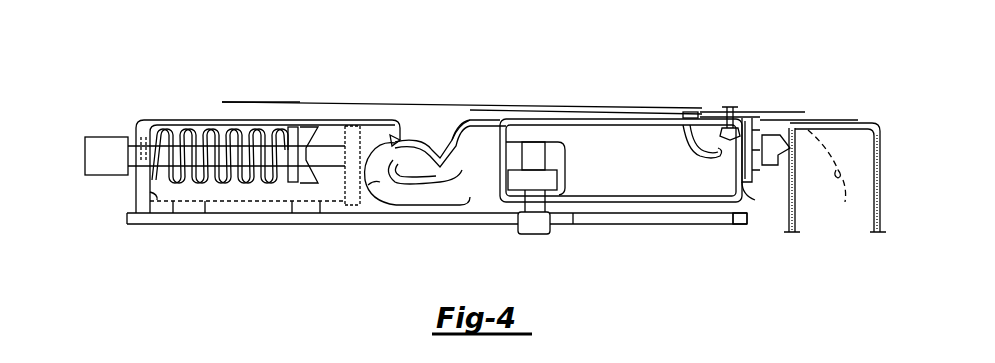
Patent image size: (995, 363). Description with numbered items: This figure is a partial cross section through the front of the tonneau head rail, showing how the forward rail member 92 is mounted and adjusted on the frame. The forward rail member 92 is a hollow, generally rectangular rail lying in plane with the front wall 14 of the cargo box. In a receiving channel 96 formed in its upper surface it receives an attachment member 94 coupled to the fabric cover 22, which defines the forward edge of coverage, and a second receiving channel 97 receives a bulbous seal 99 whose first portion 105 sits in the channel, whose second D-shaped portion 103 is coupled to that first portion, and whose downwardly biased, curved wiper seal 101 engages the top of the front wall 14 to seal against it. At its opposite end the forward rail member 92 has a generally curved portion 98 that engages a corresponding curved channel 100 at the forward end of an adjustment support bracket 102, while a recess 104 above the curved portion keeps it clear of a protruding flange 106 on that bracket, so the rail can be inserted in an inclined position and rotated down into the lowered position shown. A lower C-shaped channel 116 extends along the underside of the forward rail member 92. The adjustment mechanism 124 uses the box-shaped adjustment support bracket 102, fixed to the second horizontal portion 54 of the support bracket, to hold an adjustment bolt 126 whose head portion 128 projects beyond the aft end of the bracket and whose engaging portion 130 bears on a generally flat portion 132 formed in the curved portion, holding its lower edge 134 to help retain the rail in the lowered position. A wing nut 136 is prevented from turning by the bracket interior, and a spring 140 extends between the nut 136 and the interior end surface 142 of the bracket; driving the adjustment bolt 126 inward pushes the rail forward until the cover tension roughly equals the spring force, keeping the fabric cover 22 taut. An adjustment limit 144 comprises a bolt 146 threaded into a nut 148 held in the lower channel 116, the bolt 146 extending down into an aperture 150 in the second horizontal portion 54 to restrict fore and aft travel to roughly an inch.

The front wall 14 is at (878, 122).
The fabric cover 22 is at (668, 106).
The second horizontal portion 54 is at (209, 224).
The forward rail member 92 is at (528, 120).
The attachment member 94 is at (728, 118).
The receiving channel 96 is at (718, 152).
The receiving channel 97 is at (730, 226).
The generally curved portion 98 is at (425, 140).
The bulbous seal 99 is at (803, 180).
The curved channel 100 is at (385, 205).
The wiper seal 101 is at (855, 118).
The adjustment support bracket 102 is at (304, 120).
The second D-shaped portion 103 is at (778, 180).
The recess 104 is at (455, 135).
The first portion 105 is at (762, 128).
The protruding flange 106 is at (370, 130).
The lower C-shaped channel 116 is at (558, 158).
The adjustment mechanism 124 is at (380, 252).
The adjustment bolt 126 is at (106, 142).
The head portion 128 is at (93, 162).
The engaging portion 130 is at (395, 140).
The generally flat portion 132 is at (368, 185).
The lower edge 134 is at (438, 172).
The nut 136 is at (312, 183).
The spring 140 is at (185, 128).
The interior end surface 142 is at (157, 200).
The adjustment limit 144 is at (540, 236).
The bolt 146 is at (523, 228).
The nut 148 is at (556, 184).
The aperture 150 is at (573, 224).